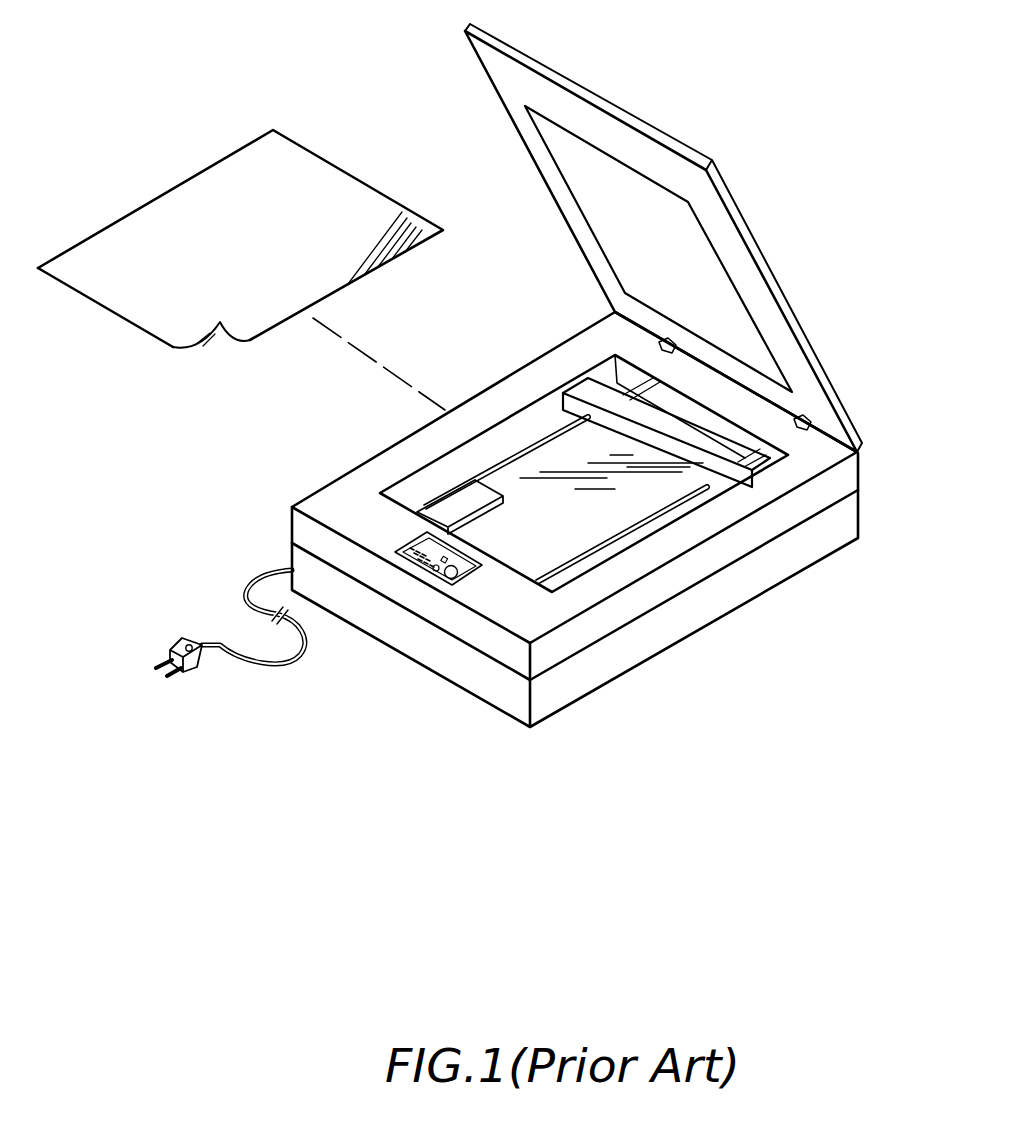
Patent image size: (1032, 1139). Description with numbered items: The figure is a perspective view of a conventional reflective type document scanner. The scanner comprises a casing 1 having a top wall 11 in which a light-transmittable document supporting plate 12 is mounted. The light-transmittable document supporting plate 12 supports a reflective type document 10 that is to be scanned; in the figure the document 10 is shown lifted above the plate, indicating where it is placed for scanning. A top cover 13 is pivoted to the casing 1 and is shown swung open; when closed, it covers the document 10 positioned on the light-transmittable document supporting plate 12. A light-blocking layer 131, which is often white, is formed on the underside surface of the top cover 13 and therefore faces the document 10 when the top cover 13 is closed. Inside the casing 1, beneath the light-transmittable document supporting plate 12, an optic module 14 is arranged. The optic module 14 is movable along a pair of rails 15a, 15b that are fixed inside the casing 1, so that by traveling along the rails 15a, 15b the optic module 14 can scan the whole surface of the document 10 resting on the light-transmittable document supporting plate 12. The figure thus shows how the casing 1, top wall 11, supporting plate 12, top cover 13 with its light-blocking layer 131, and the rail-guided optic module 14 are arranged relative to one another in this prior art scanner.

The casing 1 is at (428, 647).
The reflective type document 10 is at (212, 195).
The top wall 11 is at (797, 473).
The light-transmittable document supporting plate 12 is at (552, 537).
The top cover 13 is at (748, 250).
The light-blocking layer 131 is at (748, 323).
The optic module 14 is at (738, 473).
The rail 15a is at (552, 447).
The rail 15b is at (663, 512).